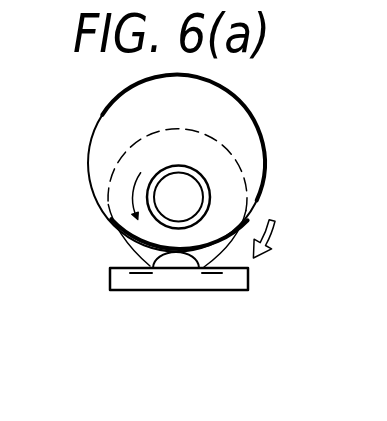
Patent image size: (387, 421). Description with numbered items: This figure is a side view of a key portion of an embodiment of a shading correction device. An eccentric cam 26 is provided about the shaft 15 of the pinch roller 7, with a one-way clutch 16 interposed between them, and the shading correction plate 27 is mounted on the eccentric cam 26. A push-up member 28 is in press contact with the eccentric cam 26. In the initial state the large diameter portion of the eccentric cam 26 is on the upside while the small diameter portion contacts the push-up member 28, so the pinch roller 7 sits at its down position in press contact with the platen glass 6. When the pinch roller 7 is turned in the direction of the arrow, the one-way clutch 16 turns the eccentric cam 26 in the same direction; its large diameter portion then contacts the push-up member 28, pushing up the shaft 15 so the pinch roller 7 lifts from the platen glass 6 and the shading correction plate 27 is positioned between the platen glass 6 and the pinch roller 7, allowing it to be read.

The platen glass 6 is at (235, 278).
The pinch roller 7 is at (133, 239).
The shaft 15 is at (185, 193).
The one-way clutch 16 is at (224, 196).
The eccentric cam 26 is at (248, 137).
The shading correction plate 27 is at (242, 99).
The push-up member 28 is at (197, 258).